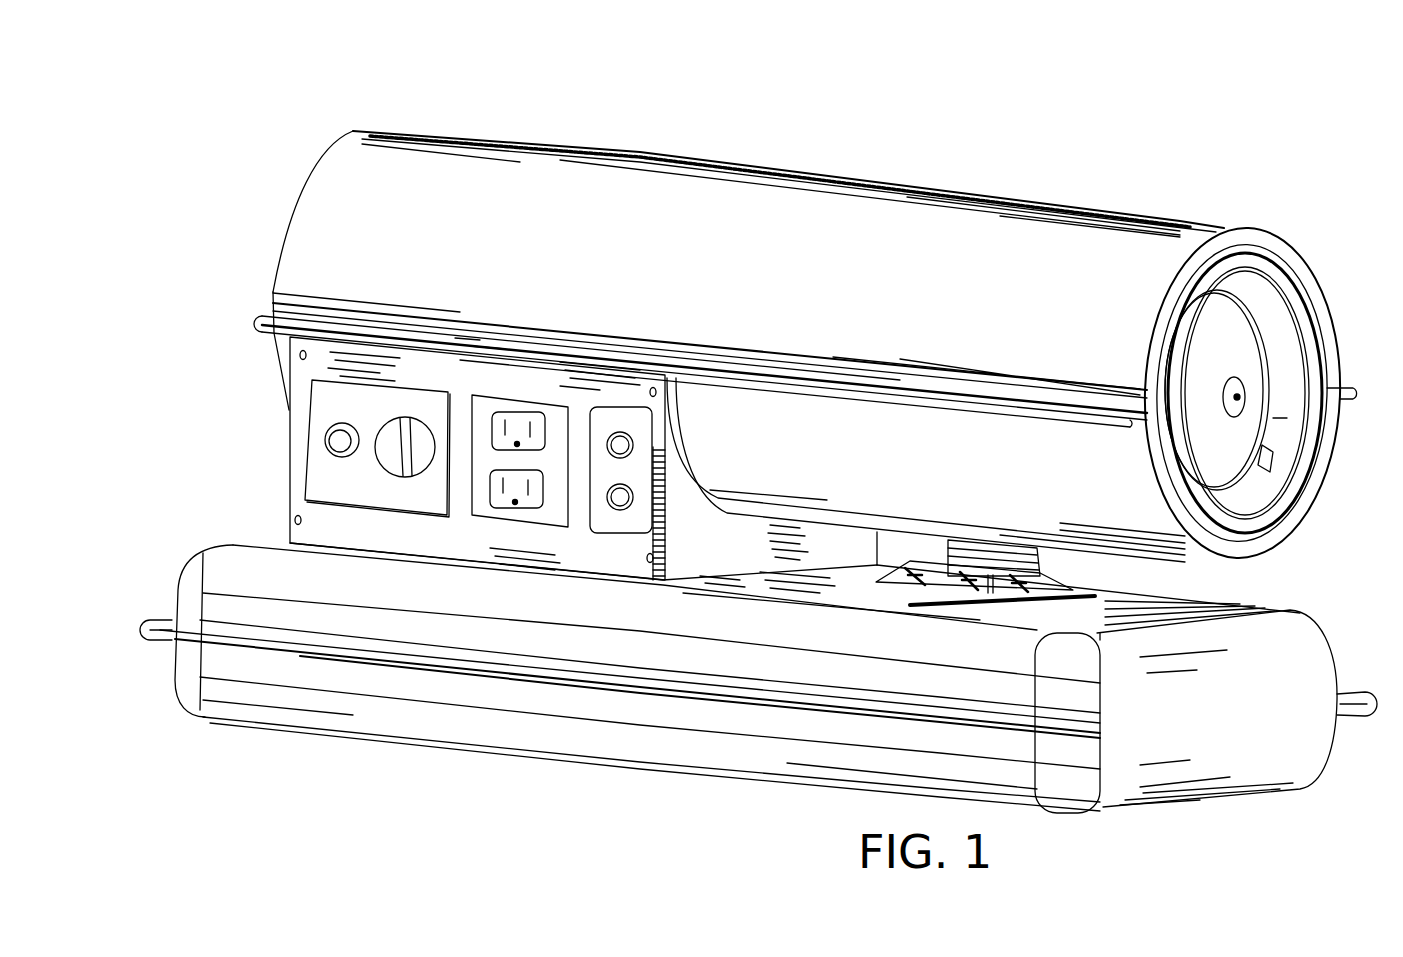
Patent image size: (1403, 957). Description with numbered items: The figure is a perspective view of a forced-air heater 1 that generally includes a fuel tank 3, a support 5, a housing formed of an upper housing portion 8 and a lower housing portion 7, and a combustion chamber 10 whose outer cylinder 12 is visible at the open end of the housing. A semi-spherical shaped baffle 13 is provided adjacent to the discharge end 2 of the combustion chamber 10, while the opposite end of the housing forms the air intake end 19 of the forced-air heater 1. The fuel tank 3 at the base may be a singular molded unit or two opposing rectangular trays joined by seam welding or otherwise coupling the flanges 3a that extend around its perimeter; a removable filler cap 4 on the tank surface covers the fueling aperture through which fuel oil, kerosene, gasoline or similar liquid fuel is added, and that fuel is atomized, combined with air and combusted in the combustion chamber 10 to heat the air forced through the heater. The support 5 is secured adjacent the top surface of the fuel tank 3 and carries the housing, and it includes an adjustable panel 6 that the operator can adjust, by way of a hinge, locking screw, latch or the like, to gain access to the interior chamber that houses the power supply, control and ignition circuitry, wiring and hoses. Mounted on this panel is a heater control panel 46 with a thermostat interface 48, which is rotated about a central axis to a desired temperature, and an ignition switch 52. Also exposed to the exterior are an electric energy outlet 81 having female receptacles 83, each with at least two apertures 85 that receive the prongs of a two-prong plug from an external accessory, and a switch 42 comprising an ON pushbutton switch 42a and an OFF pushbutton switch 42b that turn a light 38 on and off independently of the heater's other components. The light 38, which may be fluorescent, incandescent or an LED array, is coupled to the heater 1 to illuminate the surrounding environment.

The forced-air heater 1 is at (220, 170).
The discharge end 2 is at (1293, 250).
The fuel tank 3 is at (381, 717).
The flanges 3a is at (153, 622).
The removable filler cap 4 is at (970, 542).
The support 5 is at (710, 567).
The adjustable panel 6 is at (305, 458).
The lower housing portion 7 is at (1183, 561).
The upper housing portion 8 is at (700, 163).
The combustion chamber 10 is at (1310, 365).
The outer cylinder 12 is at (1313, 293).
The semi-spherical shaped baffle 13 is at (1243, 427).
The air intake end 19 is at (342, 142).
The light 38 is at (1278, 742).
The switch 42 is at (634, 388).
The ON pushbutton switch 42a is at (633, 444).
The OFF pushbutton switch 42b is at (633, 500).
The heater control panel 46 is at (355, 515).
The thermostat interface 48 is at (420, 437).
The ignition switch 52 is at (328, 440).
The electric energy outlet 81 is at (497, 386).
The female receptacle 83 is at (528, 413).
The apertures 85 is at (530, 493).